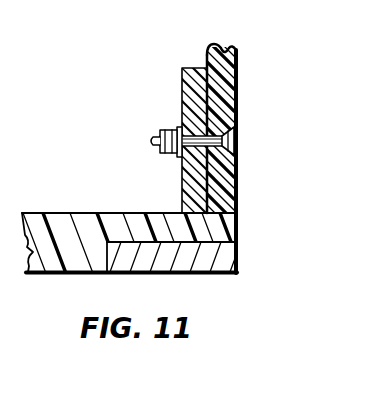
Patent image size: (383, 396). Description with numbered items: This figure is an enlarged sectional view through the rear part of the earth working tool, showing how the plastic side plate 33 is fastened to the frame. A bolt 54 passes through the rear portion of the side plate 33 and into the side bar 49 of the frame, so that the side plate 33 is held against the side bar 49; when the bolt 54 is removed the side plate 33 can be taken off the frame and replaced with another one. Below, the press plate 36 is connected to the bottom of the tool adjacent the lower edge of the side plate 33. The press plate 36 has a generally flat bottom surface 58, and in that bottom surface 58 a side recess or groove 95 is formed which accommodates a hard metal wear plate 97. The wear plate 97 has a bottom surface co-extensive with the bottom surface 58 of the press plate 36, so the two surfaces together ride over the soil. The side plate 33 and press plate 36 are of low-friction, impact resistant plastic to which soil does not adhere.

The side plate 33 is at (228, 64).
The side bar 49 is at (190, 82).
The bolt 54 is at (165, 127).
The press plate 36 is at (85, 212).
The bottom surface 58 is at (53, 273).
The side recess or groove 95 is at (220, 247).
The wear plate 97 is at (218, 256).